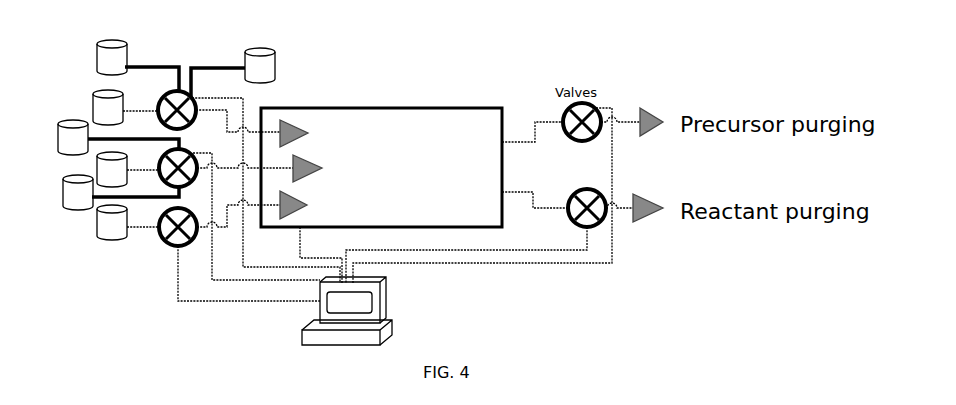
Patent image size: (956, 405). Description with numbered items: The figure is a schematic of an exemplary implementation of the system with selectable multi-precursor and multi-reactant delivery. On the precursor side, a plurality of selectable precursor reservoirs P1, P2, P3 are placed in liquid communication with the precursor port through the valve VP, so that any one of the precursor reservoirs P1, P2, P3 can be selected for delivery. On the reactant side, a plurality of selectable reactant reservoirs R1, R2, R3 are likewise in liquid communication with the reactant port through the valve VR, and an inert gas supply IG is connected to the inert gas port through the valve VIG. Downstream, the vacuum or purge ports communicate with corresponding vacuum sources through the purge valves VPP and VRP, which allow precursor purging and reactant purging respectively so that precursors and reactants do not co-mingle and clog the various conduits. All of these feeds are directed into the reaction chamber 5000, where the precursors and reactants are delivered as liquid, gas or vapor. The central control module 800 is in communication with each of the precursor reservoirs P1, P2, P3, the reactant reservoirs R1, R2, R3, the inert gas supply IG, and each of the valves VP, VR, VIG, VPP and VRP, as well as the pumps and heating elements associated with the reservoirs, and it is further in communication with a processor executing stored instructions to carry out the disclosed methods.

The reaction chamber 5000 is at (381, 167).
The central control module 800 is at (347, 311).
The precursor valve VP is at (160, 97).
The reactant valve VR is at (163, 155).
The inert gas valve VIG is at (162, 240).
The precursor purge valve VPP is at (595, 107).
The reactant purge valve VRP is at (599, 195).
The selectable precursor reservoir P1 is at (108, 107).
The selectable precursor reservoir P2 is at (112, 57).
The selectable precursor reservoir P3 is at (260, 65).
The selectable reactant reservoir R1 is at (112, 169).
The selectable reactant reservoir R2 is at (73, 137).
The selectable reactant reservoir R3 is at (78, 192).
The inert gas source IG is at (112, 222).